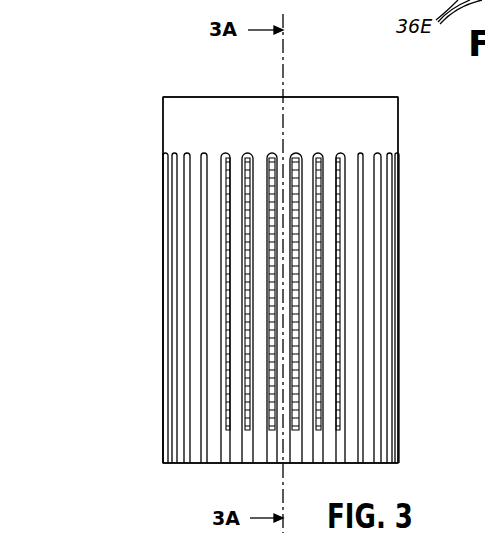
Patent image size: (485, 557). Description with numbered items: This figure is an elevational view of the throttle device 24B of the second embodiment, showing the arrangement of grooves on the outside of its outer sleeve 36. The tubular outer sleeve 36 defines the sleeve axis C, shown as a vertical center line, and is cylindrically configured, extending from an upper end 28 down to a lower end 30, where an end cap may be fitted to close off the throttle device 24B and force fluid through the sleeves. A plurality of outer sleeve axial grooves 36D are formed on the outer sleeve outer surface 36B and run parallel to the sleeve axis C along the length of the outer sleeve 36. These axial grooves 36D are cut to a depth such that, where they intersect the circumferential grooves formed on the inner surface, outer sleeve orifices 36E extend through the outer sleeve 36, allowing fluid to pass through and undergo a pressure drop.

The throttle device 24B is at (171, 52).
The outer sleeve 36 is at (178, 97).
The upper end 28 is at (163, 118).
The lower end 30 is at (165, 459).
The outer sleeve outer surface 36B is at (385, 118).
The outer sleeve orifices 36E is at (317, 174).
The outer sleeve axial grooves 36D is at (378, 293).
The sleeve axis C is at (283, 68).